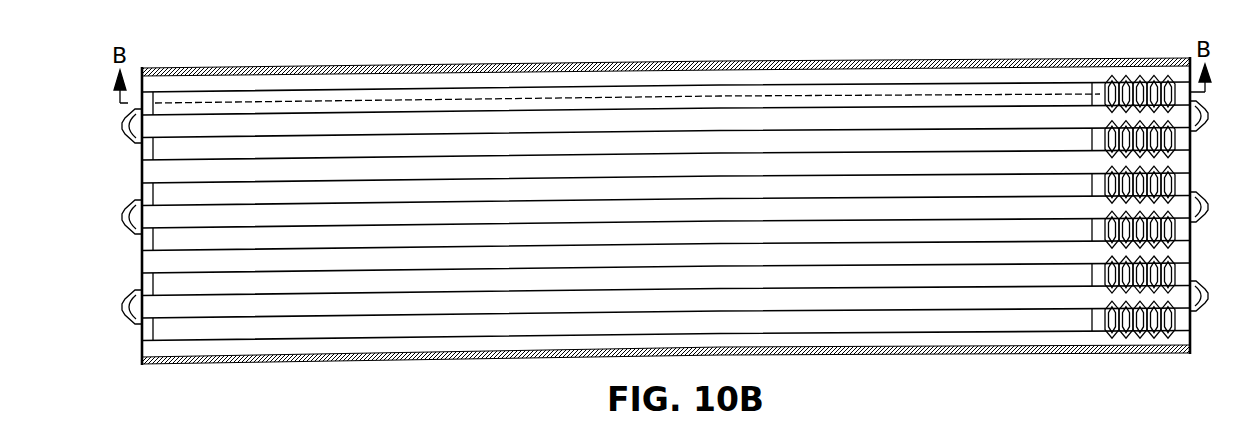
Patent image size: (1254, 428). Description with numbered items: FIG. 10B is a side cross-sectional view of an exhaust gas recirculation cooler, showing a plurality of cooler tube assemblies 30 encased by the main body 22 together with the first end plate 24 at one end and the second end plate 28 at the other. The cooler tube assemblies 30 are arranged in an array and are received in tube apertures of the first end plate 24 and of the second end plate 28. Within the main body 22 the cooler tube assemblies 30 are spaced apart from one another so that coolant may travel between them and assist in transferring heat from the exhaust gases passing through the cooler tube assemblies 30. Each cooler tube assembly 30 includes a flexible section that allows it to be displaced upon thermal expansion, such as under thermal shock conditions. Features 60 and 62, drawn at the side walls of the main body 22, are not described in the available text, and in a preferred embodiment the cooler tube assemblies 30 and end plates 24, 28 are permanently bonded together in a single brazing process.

The main body 22 is at (562, 66).
The first end plate 24 is at (141, 70).
The second end plate 28 is at (1211, 83).
The cooler tube assemblies 30 is at (901, 321).
The inlet port 60 is at (123, 128).
The outlet port 62 is at (1209, 206).